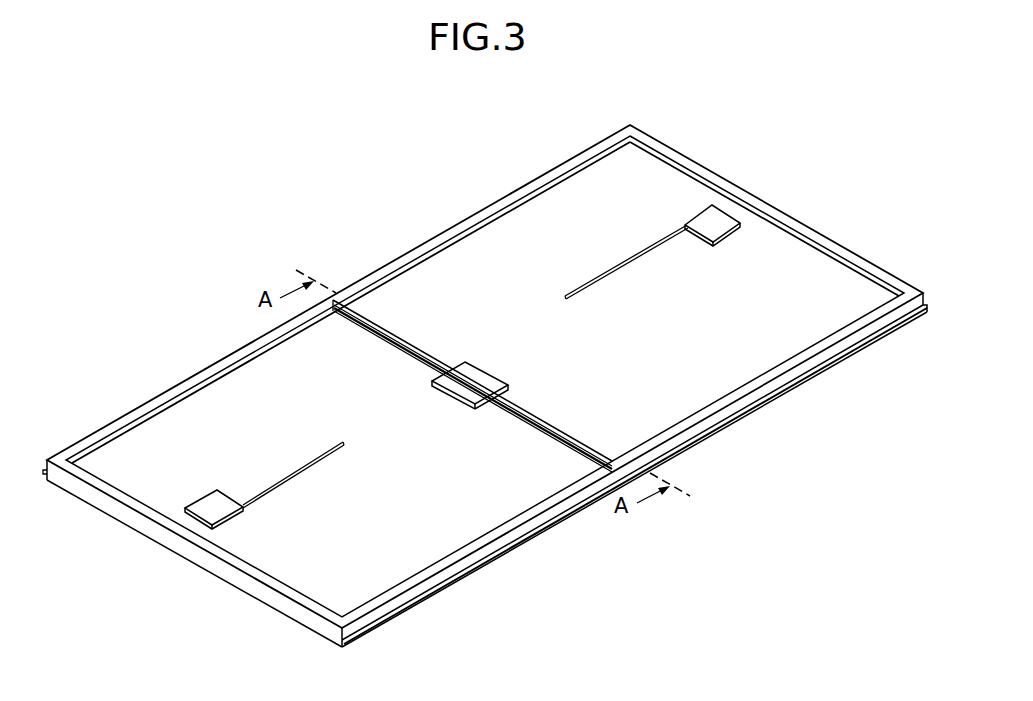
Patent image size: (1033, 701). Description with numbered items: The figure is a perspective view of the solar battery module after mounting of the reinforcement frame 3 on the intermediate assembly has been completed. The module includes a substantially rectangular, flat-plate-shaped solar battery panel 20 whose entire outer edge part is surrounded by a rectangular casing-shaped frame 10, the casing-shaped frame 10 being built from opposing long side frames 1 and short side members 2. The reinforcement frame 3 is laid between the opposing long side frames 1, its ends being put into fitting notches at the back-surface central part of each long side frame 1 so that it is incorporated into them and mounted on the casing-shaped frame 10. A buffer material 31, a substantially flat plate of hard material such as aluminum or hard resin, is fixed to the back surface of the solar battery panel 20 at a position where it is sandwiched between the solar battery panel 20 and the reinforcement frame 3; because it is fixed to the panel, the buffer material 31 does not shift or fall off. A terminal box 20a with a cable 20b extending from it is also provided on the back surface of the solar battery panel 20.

The long side frame 1 is at (205, 368).
The short-side frame member 2 is at (717, 174).
The reinforcement frame 3 is at (436, 341).
The casing-shaped frame 10 is at (512, 192).
The solar battery panel 20 is at (413, 558).
The terminal box 20a is at (703, 218).
The cable 20b is at (618, 248).
The buffer material 31 is at (487, 373).